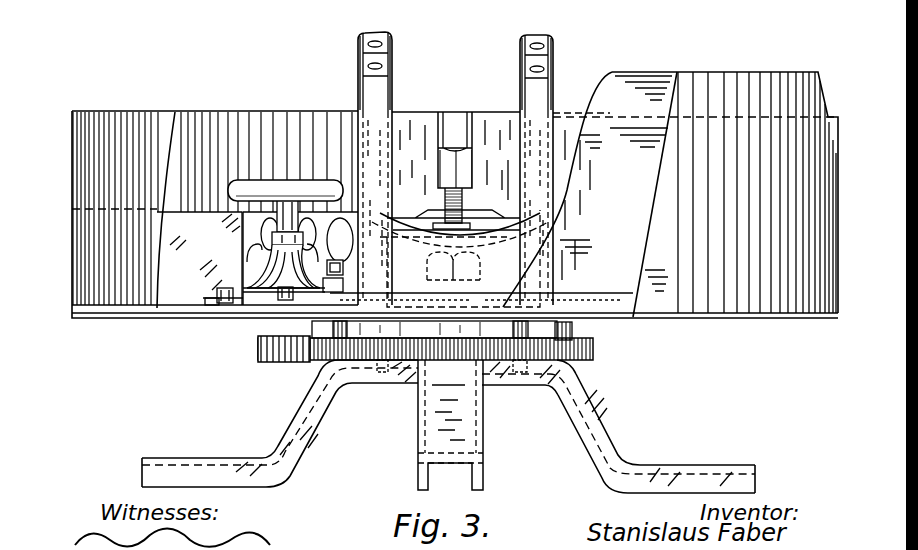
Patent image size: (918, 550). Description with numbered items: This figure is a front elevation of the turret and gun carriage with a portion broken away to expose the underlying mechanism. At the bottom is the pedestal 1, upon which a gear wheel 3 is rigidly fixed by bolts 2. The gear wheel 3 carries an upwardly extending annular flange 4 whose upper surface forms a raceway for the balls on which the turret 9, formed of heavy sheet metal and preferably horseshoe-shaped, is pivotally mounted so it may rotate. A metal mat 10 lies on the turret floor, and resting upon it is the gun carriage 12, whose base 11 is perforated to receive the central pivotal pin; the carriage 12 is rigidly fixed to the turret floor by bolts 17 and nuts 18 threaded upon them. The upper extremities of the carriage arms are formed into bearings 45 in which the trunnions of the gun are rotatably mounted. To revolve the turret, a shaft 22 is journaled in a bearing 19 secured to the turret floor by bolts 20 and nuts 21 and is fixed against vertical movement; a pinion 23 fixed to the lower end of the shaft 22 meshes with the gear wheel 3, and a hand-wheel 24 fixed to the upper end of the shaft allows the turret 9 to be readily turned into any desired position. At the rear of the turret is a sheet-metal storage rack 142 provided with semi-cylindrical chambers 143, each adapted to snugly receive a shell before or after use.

The pedestal 1 is at (600, 420).
The bolts 2 is at (380, 373).
The gear wheel 3 is at (595, 353).
The annular flange 4 is at (567, 332).
The turret 9 is at (737, 92).
The metal mat 10 is at (383, 308).
The carriage base 11 is at (477, 305).
The gun carriage 12 is at (380, 120).
The bolts 17 is at (338, 322).
The nuts 18 is at (345, 275).
The bearing 19 is at (285, 273).
The bolts 20 is at (232, 280).
The nuts 21 is at (218, 306).
The shaft 22 is at (287, 226).
The pinion 23 is at (268, 362).
The hand-wheel 24 is at (253, 188).
The bearings 45 is at (388, 82).
The storage rack 142 is at (182, 292).
The semi-cylindrical chambers 143 is at (348, 195).